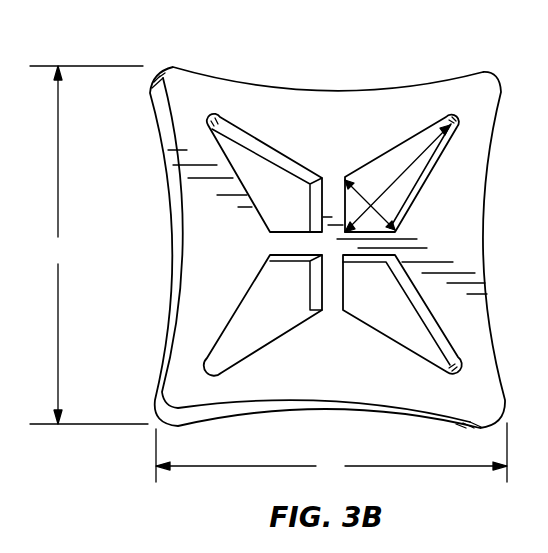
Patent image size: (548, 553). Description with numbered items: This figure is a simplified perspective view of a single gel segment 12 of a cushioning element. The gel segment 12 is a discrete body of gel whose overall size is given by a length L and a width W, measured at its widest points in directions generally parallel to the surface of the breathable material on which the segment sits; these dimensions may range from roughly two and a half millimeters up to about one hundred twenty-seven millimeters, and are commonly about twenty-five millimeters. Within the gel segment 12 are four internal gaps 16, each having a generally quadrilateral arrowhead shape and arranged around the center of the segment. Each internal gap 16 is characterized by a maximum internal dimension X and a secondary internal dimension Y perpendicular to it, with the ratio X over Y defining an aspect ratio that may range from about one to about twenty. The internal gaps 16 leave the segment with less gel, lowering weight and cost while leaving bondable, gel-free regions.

The gel segment 12 is at (433, 98).
The internal gap 16 is at (257, 168).
The maximum internal dimension X is at (397, 178).
The secondary internal dimension Y is at (370, 205).
The length L is at (89, 245).
The width W is at (331, 452).